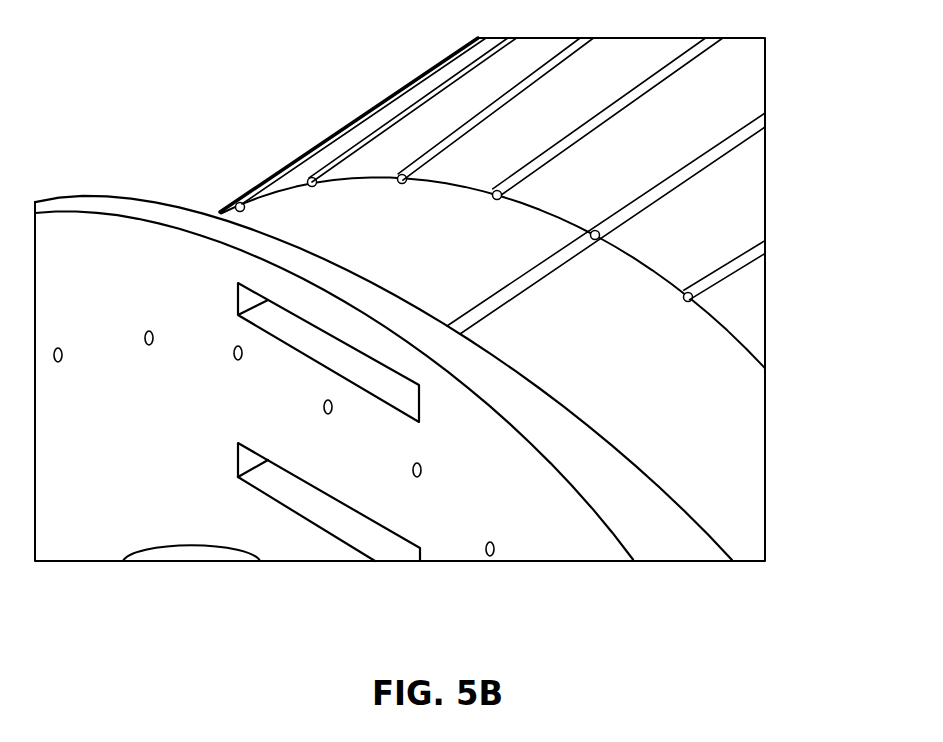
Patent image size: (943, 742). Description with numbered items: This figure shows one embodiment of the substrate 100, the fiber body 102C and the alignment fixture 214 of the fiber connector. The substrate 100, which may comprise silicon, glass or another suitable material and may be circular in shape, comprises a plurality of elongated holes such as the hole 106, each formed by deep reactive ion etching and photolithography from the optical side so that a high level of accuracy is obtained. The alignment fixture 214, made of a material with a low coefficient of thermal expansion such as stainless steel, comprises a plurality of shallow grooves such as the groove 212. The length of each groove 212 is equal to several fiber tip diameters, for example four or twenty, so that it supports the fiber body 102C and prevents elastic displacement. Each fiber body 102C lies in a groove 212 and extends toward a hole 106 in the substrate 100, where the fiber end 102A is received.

The substrate 100 is at (110, 198).
The alignment fixture 214 is at (405, 112).
The groove 212 is at (688, 62).
The fiber body 102C is at (670, 177).
The fiber end 102A is at (333, 413).
The hole 106 is at (422, 472).